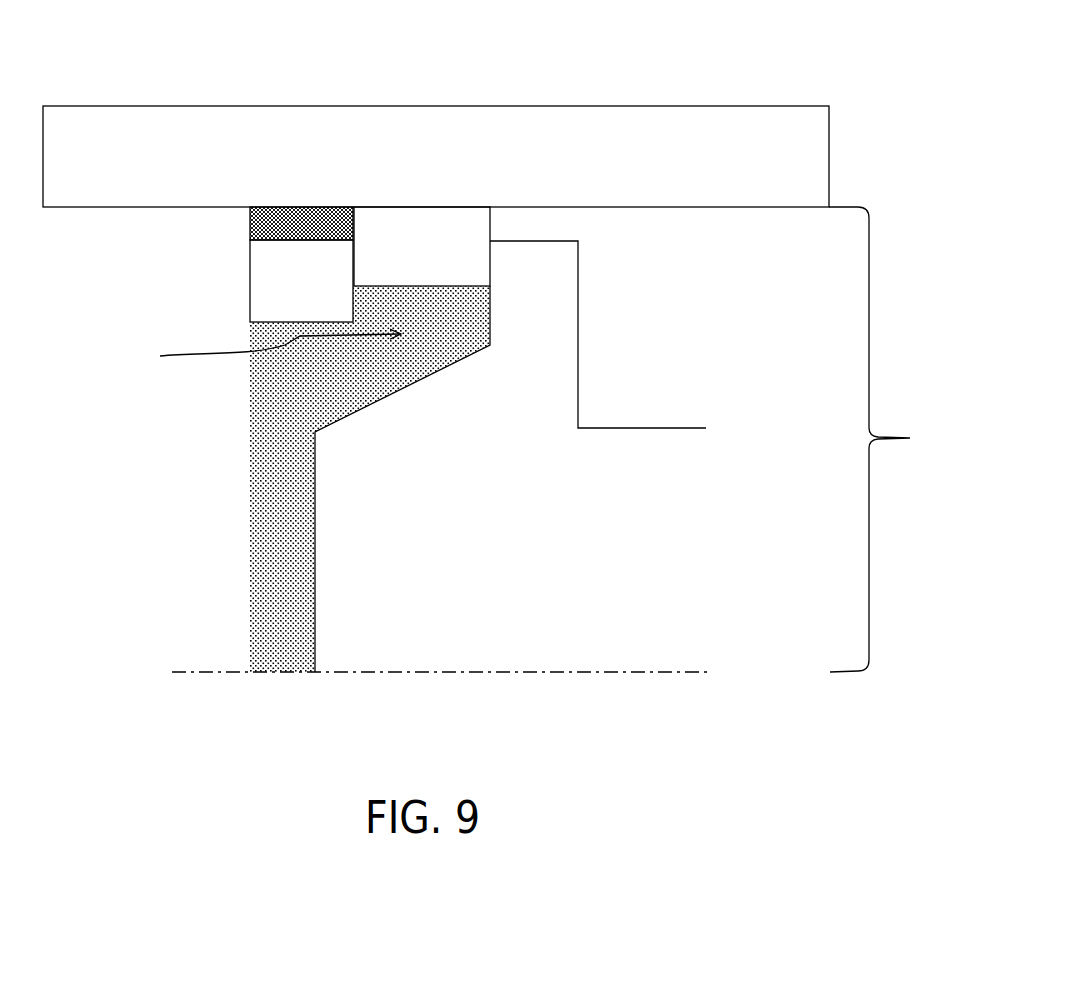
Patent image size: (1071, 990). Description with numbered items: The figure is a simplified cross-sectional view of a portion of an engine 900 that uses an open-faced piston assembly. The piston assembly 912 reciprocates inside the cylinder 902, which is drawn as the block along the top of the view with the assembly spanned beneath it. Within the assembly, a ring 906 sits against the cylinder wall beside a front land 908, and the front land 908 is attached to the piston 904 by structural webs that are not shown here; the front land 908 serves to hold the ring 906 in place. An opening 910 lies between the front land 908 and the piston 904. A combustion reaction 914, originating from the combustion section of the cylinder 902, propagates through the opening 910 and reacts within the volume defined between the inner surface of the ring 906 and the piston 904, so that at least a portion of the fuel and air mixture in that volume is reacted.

The engine 900 is at (455, 30).
The cylinder 902 is at (612, 157).
The piston 904 is at (513, 458).
The ring 906 is at (468, 232).
The front land 908 is at (260, 290).
The opening 910 is at (325, 387).
The piston assembly 912 is at (895, 439).
The combustion reaction 914 is at (247, 349).